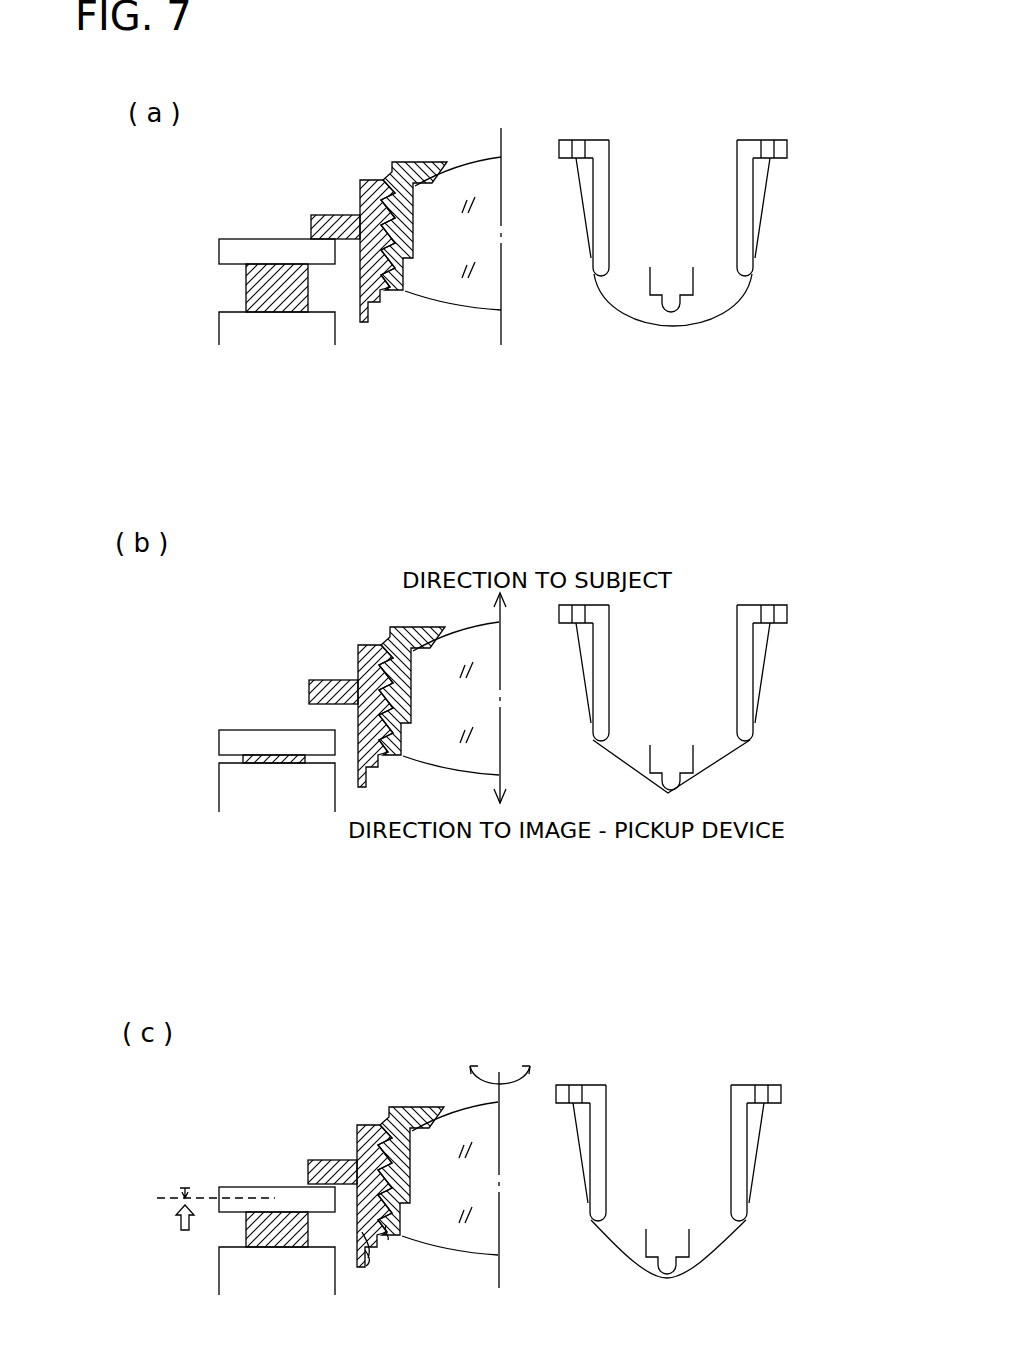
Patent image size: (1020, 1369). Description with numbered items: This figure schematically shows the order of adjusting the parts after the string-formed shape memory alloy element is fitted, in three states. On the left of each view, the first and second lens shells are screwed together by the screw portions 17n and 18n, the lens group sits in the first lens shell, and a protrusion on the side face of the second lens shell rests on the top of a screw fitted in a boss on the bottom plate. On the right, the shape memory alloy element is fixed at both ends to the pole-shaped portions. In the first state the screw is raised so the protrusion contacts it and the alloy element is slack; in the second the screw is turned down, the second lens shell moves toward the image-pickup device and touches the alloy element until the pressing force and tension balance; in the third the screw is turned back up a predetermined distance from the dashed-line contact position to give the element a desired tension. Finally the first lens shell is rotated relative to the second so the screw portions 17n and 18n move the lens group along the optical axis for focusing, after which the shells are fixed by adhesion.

The screw portion 17n is at (388, 1237).
The screw portion 18n is at (369, 1262).